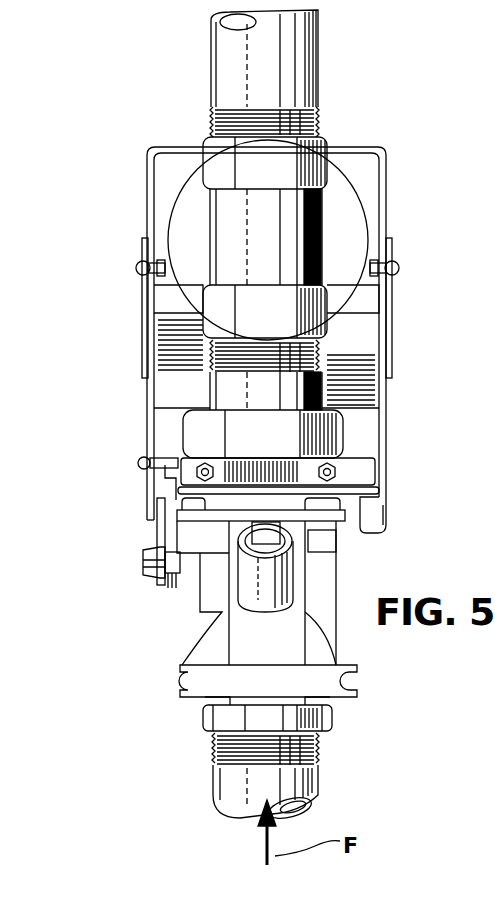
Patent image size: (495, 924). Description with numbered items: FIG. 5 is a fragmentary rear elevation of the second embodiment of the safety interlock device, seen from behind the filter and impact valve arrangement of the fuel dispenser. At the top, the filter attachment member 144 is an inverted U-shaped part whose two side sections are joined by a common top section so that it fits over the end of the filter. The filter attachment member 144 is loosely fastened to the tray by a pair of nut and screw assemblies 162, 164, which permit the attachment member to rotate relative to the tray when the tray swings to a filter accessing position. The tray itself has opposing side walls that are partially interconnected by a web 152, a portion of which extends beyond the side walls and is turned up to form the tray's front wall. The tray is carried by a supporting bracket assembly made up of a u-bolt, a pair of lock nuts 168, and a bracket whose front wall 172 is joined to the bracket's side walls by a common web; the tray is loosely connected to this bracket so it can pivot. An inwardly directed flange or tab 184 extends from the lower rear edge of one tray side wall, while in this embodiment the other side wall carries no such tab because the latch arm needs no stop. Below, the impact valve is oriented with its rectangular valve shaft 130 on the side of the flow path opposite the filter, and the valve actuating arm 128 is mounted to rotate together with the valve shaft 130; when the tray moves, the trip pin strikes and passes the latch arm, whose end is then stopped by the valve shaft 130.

The filter attachment member 144 is at (352, 148).
The web 152 is at (372, 360).
The nut and screw assembly 162 is at (398, 268).
The nut and screw assembly 164 is at (138, 268).
The lock nuts 168 is at (303, 452).
The front wall 172 is at (354, 468).
The valve actuating arm 128 is at (157, 538).
The valve shaft 130 is at (168, 580).
The flange or tab 184 is at (378, 525).